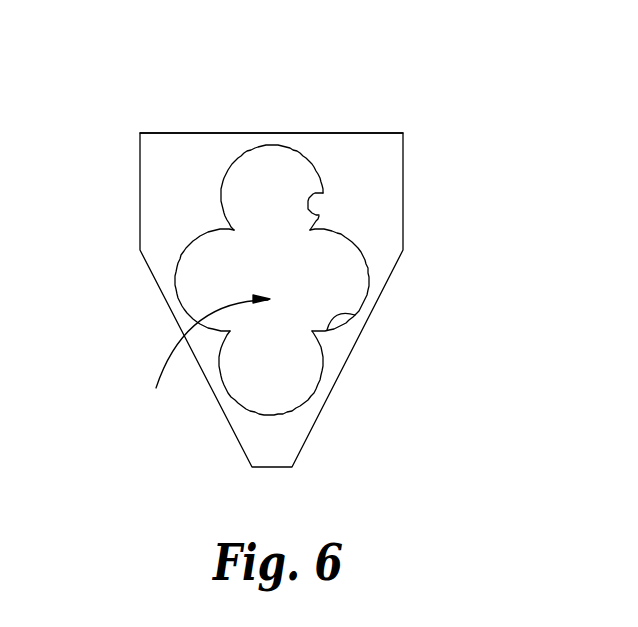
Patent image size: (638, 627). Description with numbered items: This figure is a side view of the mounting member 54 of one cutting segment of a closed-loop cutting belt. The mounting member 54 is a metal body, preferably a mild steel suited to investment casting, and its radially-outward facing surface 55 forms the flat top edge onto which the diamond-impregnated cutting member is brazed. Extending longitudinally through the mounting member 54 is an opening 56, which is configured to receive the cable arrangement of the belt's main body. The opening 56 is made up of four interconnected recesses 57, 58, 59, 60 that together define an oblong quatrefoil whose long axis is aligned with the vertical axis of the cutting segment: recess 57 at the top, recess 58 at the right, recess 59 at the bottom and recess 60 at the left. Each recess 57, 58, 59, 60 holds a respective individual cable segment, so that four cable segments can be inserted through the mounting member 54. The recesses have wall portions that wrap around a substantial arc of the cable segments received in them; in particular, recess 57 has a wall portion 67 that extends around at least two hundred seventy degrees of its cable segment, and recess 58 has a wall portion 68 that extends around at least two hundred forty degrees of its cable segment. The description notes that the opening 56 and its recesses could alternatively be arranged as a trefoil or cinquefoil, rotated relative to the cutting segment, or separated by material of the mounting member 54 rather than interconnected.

The mounting member 54 is at (387, 166).
The radially-outward facing surface 55 is at (183, 133).
The opening 56 is at (205, 358).
The recess 57 is at (285, 185).
The recess 58 is at (337, 284).
The recess 59 is at (305, 372).
The recess 60 is at (207, 263).
The wall portion 67 is at (323, 193).
The wall portion 68 is at (353, 315).